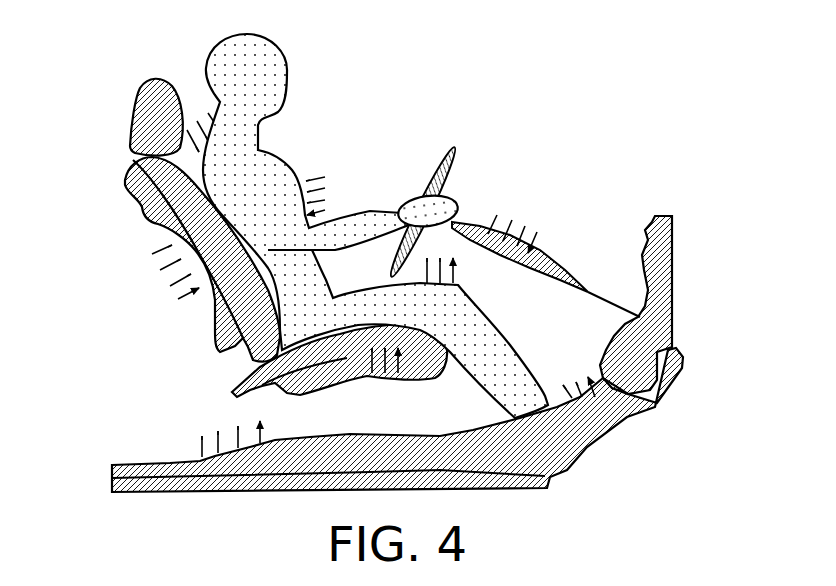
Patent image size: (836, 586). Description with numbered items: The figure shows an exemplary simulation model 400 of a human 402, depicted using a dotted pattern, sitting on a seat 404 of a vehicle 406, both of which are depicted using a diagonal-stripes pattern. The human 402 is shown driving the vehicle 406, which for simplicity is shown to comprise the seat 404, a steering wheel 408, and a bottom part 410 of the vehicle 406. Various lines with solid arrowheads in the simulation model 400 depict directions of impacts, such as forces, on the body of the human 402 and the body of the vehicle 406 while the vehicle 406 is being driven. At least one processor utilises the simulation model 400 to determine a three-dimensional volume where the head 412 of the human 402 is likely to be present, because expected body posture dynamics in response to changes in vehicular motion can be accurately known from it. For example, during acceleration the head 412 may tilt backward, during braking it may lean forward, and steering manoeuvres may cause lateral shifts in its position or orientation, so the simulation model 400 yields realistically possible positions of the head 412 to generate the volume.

The simulation model 400 is at (688, 53).
The human 402 is at (347, 88).
The seat 404 is at (143, 201).
The vehicle 406 is at (661, 216).
The steering wheel 408 is at (456, 160).
The bottom part 410 is at (553, 460).
The head 412 is at (222, 47).